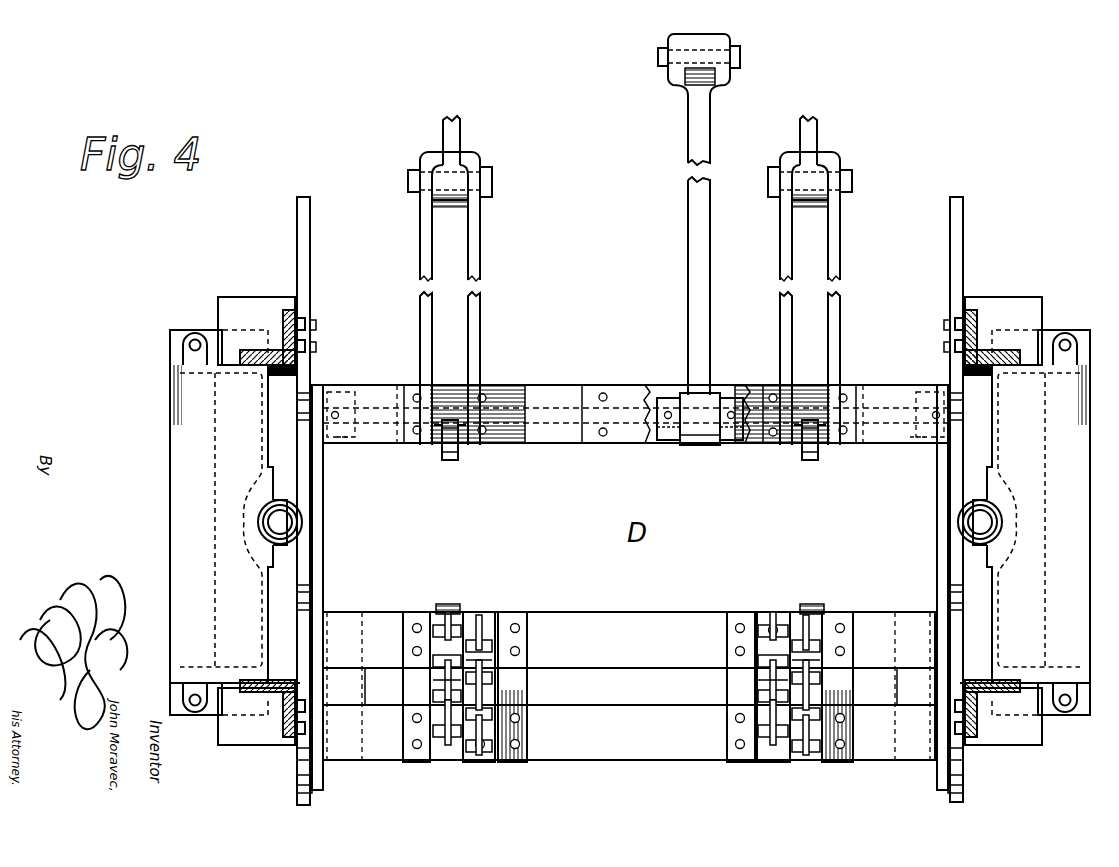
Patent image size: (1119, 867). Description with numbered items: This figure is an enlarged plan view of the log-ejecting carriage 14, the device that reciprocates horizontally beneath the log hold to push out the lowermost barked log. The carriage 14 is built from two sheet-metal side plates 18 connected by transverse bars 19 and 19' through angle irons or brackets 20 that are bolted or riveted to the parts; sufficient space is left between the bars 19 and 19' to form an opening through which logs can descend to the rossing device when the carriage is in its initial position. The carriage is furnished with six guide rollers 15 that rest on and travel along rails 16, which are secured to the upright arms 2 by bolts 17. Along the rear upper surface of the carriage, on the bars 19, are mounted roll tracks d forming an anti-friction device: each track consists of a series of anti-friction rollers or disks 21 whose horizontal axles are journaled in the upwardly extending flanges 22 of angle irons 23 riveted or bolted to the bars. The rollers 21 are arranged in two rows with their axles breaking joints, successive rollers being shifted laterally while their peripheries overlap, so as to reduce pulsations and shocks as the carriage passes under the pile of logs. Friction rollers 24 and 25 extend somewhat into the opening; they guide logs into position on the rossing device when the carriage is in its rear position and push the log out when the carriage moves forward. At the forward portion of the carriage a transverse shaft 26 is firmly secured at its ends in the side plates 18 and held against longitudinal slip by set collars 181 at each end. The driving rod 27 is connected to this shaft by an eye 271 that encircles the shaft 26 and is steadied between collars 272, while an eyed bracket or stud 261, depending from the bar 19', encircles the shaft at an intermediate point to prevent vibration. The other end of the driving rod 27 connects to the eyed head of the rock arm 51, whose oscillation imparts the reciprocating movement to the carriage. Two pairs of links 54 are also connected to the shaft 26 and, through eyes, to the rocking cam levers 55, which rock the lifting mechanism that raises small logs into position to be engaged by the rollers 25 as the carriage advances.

The upright arms 2 is at (300, 328).
The carriage 14 is at (877, 643).
The guide rollers 15 is at (297, 406).
The rails 16 is at (297, 246).
The bolts 17 is at (315, 320).
The side plates 18 is at (323, 520).
The set collars 181 is at (342, 443).
The transverse bars 19 is at (629, 686).
The transverse bar 19' is at (635, 430).
The angle irons or brackets 20 is at (340, 392).
The anti-friction rollers or disks 21 is at (458, 612).
The upwardly extending flanges 22 is at (492, 700).
The angle irons 23 is at (403, 640).
The friction rollers 24 is at (458, 458).
The friction rollers 25 is at (446, 604).
The transverse shaft 26 is at (707, 419).
The eyed bracket or stud 261 is at (598, 385).
The eye 271 is at (700, 445).
The collars 272 is at (660, 443).
The driving rod 27 is at (688, 256).
The rock arm 51 is at (690, 70).
The links 54 is at (420, 325).
The rocking cam levers 55 is at (443, 128).
The roll tracks d is at (527, 645).